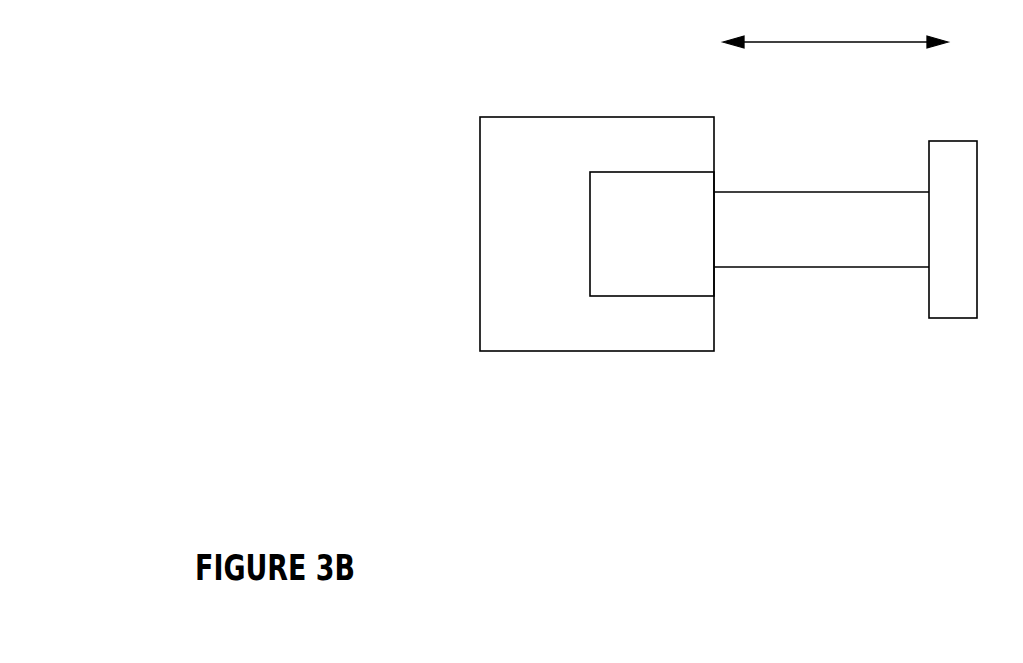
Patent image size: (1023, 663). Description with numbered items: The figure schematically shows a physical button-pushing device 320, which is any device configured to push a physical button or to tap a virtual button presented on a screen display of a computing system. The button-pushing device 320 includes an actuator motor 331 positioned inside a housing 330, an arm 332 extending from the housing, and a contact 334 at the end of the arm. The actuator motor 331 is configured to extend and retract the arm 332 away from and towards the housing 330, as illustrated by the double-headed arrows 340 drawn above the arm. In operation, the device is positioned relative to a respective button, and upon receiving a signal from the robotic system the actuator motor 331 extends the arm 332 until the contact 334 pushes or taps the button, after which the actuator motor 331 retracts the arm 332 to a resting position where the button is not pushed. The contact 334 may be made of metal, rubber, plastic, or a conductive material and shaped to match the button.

The physical button-pushing device 320 is at (502, 56).
The housing 330 is at (492, 353).
The actuator motor 331 is at (590, 296).
The arm 332 is at (855, 268).
The contact 334 is at (942, 318).
The arrows 340 is at (790, 41).